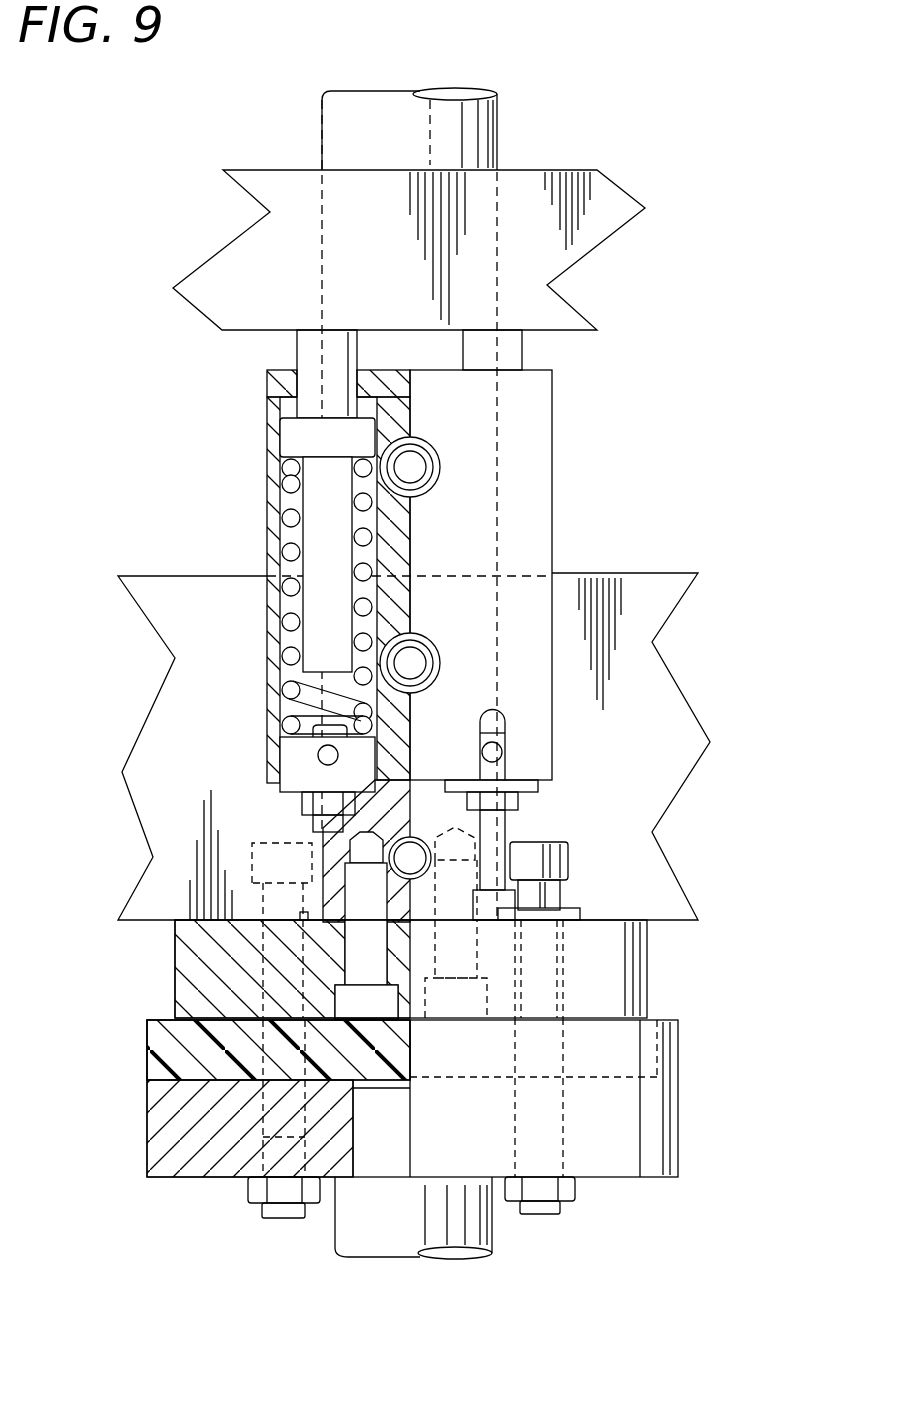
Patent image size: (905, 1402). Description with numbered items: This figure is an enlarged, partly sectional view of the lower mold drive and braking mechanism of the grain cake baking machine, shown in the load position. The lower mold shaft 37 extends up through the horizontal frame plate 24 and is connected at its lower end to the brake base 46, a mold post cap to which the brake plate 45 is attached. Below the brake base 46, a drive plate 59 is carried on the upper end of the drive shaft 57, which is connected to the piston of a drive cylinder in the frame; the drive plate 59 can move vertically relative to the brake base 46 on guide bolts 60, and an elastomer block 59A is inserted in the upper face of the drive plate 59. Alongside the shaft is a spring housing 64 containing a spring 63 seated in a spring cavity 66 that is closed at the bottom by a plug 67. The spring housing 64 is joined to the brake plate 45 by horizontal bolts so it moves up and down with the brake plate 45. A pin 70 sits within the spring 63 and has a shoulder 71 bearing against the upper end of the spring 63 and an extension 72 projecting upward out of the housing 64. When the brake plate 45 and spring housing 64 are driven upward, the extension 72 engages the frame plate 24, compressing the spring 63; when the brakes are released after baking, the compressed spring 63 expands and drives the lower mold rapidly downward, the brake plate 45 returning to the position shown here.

The horizontal plate 24 is at (587, 237).
The shaft 37 is at (497, 140).
The brake plate 45 is at (657, 712).
The brake base 46 is at (648, 945).
The shaft 57 is at (378, 1248).
The drive plate 59 is at (418, 1097).
The elastomer block 59A is at (180, 1068).
The guide bolt 60 is at (284, 1220).
The spring 63 is at (292, 596).
The spring housing 64 is at (553, 478).
The spring cavity 66 is at (288, 602).
The plug 67 is at (293, 775).
The pin 70 is at (318, 640).
The shoulder 71 is at (290, 438).
The extension 72 is at (313, 345).